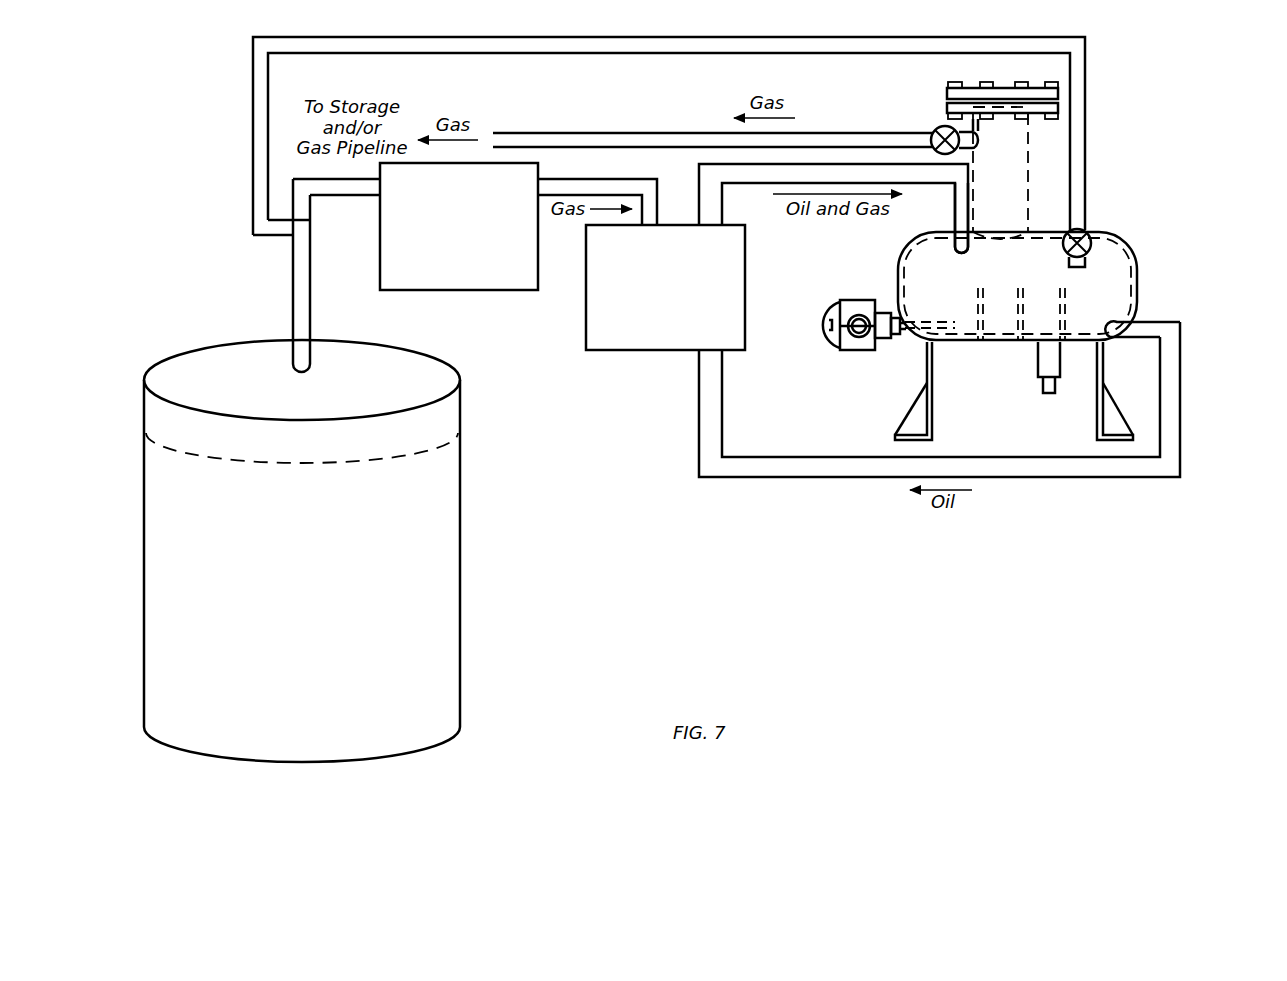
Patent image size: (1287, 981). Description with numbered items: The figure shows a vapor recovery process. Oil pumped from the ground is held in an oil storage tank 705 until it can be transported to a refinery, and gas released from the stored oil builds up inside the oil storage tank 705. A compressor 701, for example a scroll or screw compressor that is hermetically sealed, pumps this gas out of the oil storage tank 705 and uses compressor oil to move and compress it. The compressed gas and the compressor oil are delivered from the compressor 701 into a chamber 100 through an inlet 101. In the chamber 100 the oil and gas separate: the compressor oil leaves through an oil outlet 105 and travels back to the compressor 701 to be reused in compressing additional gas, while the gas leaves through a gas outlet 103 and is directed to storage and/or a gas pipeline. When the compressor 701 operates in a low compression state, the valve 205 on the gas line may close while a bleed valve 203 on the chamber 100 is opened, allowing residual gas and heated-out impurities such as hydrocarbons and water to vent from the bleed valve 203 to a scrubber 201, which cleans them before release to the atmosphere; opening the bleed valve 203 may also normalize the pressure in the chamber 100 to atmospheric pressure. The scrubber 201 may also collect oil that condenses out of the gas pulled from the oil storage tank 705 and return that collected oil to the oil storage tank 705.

The chamber 100 is at (896, 356).
The inlet 101 is at (953, 249).
The gas outlet 103 is at (978, 137).
The oil outlet 105 is at (1123, 330).
The scrubber 201 is at (459, 226).
The bleed valve 203 is at (1087, 230).
The valve 205 is at (940, 127).
The compressor 701 is at (665, 287).
The oil storage tank 705 is at (302, 578).